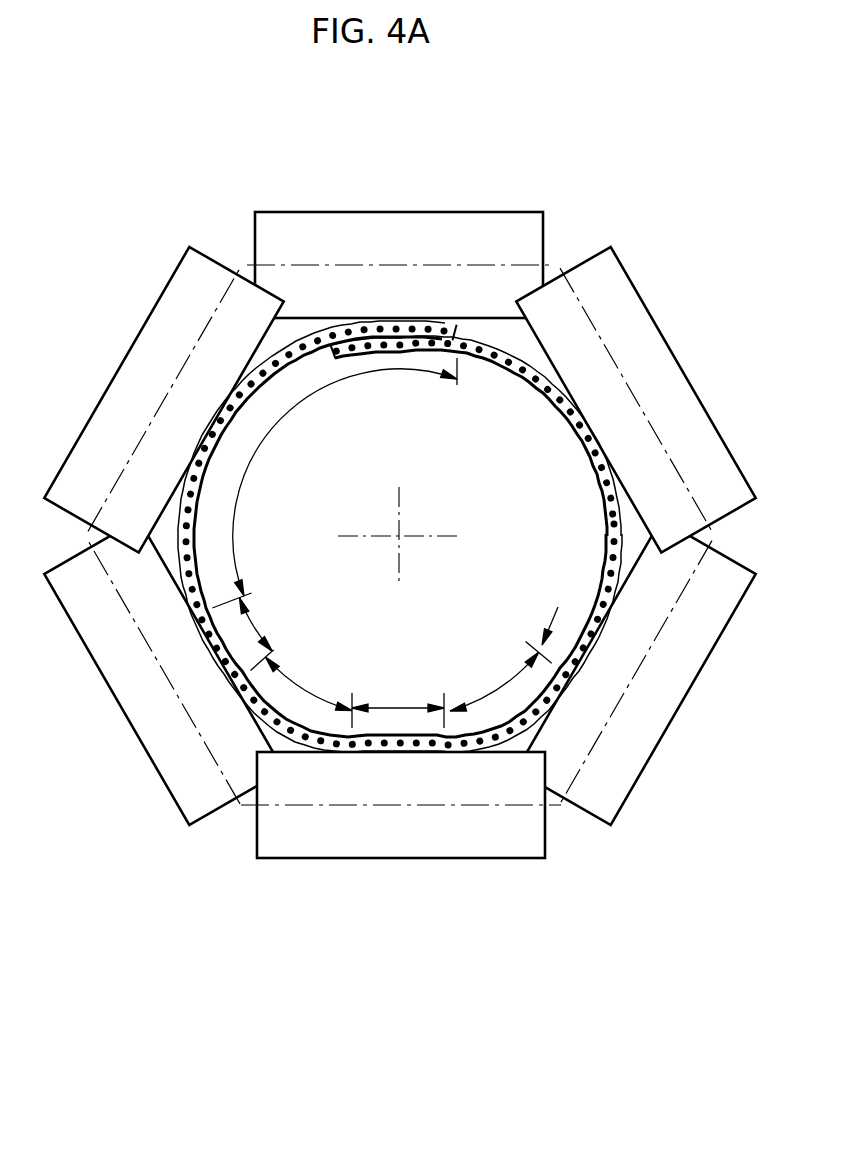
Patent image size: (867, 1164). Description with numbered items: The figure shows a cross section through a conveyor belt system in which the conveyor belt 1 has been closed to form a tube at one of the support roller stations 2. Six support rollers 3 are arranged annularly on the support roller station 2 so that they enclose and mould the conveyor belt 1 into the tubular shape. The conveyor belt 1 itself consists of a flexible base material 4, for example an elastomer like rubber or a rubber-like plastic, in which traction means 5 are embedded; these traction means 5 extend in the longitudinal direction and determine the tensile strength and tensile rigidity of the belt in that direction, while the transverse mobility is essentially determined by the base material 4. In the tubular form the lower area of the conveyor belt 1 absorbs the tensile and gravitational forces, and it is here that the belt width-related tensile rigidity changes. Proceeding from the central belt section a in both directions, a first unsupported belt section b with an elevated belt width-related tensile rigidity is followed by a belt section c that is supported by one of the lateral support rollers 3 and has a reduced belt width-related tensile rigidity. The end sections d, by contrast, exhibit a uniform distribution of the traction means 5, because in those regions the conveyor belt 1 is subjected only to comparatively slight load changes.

The conveyor belt 1 is at (438, 604).
The support roller station 2 is at (400, 565).
The support roller 3 is at (597, 272).
The flexible base material 4 is at (383, 752).
The traction means 5 is at (433, 752).
The central belt section a is at (402, 707).
The first unsupported belt section b is at (310, 693).
The supported belt section c is at (254, 626).
The end section d is at (307, 400).